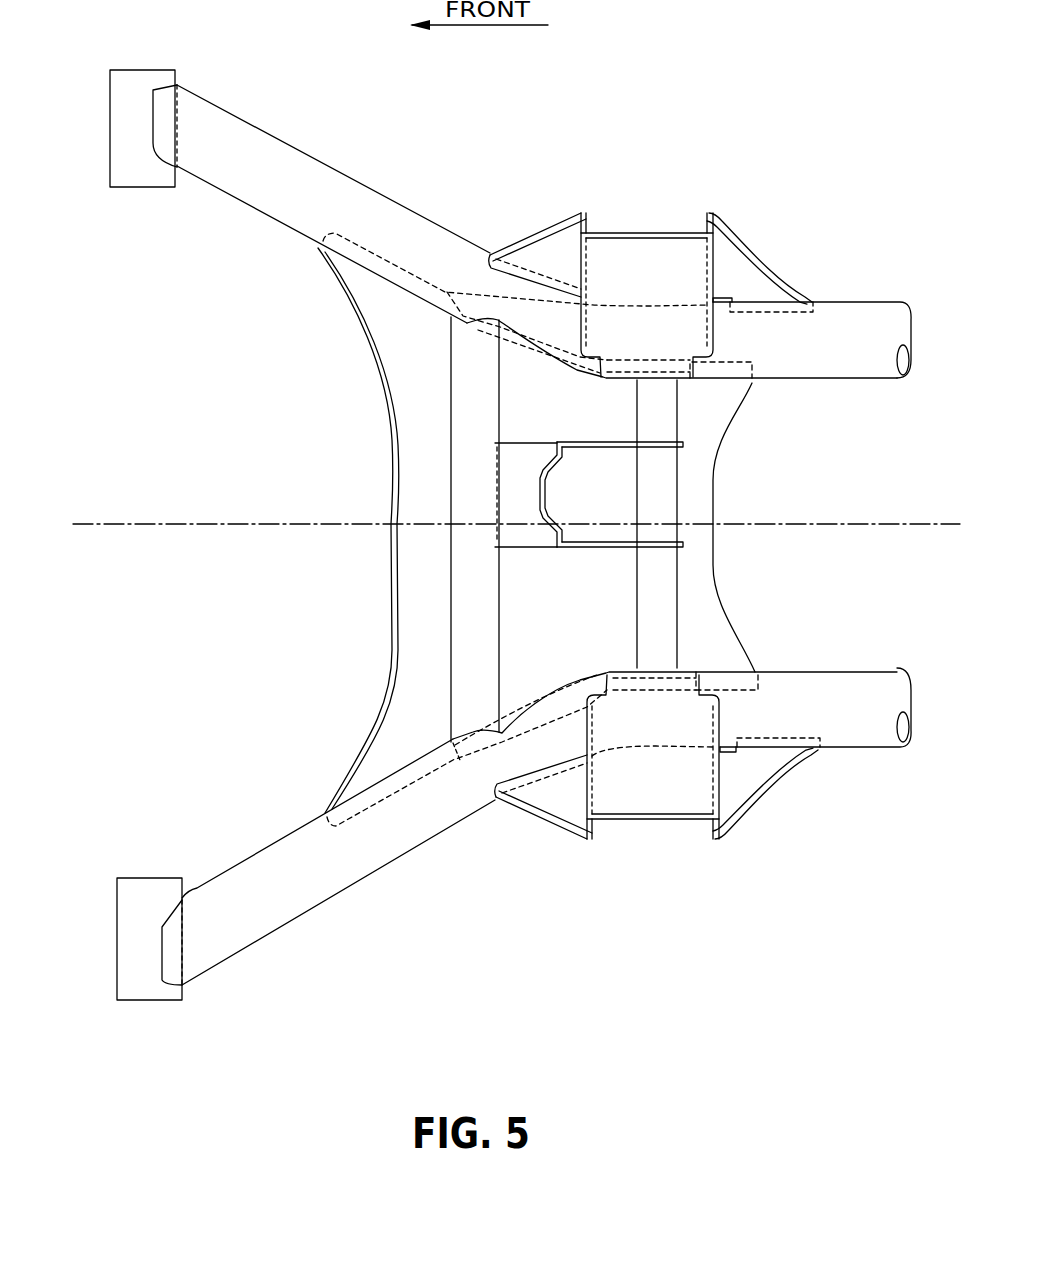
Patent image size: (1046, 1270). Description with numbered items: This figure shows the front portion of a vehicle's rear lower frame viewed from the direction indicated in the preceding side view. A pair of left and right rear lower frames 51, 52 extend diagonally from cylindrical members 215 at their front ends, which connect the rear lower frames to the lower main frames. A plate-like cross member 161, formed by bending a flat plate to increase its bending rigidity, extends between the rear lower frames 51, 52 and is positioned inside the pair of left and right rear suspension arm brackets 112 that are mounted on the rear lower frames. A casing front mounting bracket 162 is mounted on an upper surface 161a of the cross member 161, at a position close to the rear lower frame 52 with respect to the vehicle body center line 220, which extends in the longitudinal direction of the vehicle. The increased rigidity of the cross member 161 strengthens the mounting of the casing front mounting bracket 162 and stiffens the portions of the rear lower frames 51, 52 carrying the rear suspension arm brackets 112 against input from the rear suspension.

The rear lower frame 51 is at (285, 913).
The rear lower frame 52 is at (252, 135).
The rear suspension arm bracket 112 is at (645, 258).
The cross member 161 is at (388, 605).
The upper surface 161a is at (510, 402).
The casing front mounting bracket 162 is at (507, 495).
The cylindrical member 215 is at (138, 190).
The vehicle body center line 220 is at (160, 524).